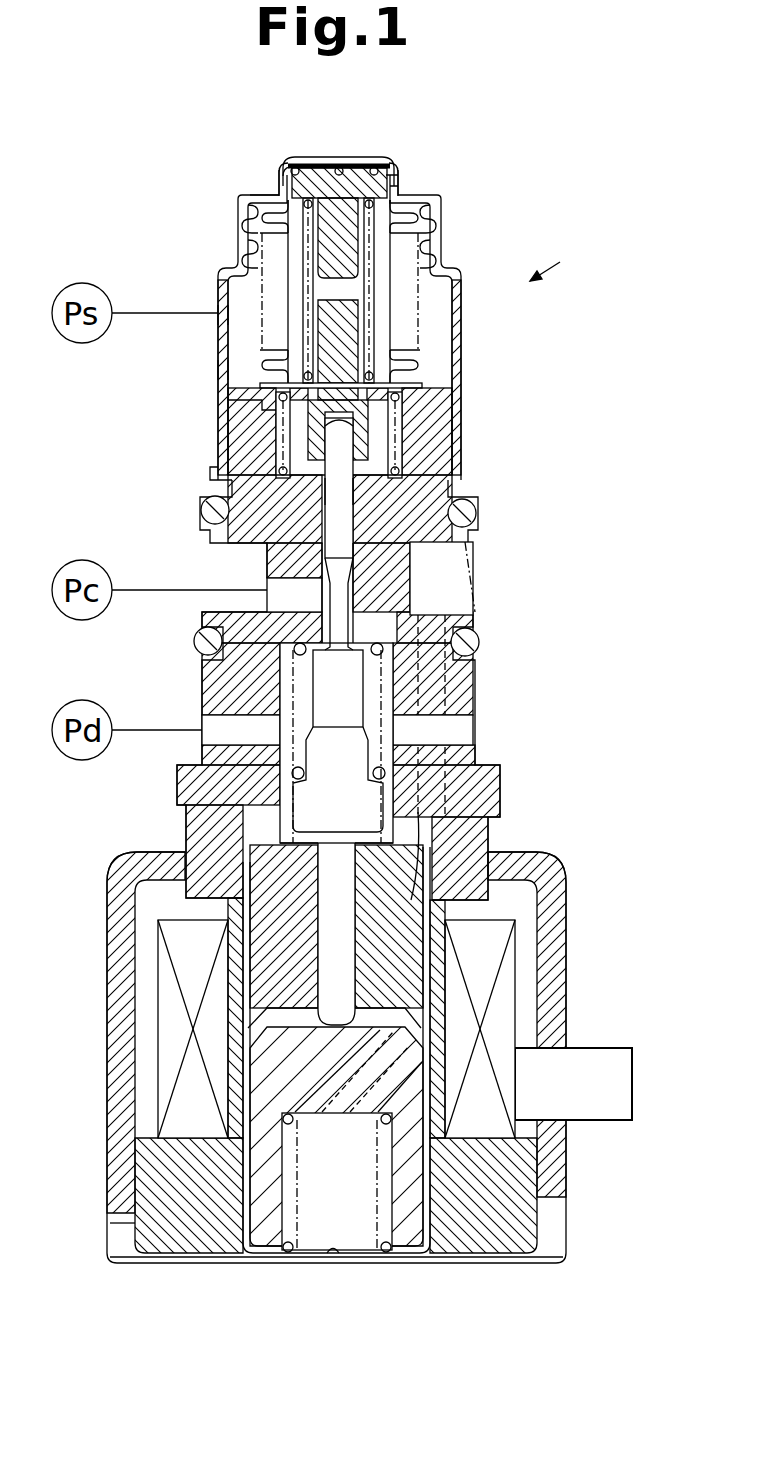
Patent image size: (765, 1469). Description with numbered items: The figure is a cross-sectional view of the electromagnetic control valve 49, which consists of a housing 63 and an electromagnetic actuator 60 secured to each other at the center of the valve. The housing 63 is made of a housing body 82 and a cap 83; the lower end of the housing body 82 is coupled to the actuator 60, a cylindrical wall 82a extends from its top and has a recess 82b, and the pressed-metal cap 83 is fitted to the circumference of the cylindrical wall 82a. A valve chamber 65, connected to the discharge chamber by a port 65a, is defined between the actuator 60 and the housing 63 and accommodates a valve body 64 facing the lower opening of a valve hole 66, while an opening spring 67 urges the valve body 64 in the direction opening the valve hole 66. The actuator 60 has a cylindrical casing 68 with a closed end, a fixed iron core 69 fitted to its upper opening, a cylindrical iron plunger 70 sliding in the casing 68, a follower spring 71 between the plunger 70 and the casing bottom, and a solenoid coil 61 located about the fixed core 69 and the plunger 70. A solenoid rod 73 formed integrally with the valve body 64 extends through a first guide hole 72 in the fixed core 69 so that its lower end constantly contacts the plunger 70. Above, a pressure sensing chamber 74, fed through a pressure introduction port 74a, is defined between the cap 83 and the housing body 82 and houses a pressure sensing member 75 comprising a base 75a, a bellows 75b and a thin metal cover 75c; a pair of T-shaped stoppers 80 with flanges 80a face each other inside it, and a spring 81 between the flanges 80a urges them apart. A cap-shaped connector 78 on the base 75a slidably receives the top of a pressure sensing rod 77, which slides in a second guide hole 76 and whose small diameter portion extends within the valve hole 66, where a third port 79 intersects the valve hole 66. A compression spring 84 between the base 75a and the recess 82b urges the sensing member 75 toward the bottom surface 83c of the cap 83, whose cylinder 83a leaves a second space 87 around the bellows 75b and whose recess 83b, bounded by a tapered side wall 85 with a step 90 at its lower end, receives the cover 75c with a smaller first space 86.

The control valve 49 is at (604, 273).
The electromagnetic actuator 60 is at (562, 878).
The solenoid coil 61 is at (505, 960).
The housing 63 is at (455, 497).
The valve body 64 is at (327, 683).
The valve chamber 65 is at (390, 690).
The port 65a is at (217, 742).
The valve hole 66 is at (353, 602).
The opening spring 67 is at (385, 650).
The casing 68 is at (337, 1258).
The fixed iron core 69 is at (262, 957).
The plunger 70 is at (400, 1250).
The follower spring 71 is at (284, 1260).
The first guide hole 72 is at (350, 873).
The solenoid rod 73 is at (347, 947).
The pressure sensing chamber 74 is at (355, 315).
The pressure introduction port 74a is at (218, 323).
The pressure sensing member 75 is at (428, 352).
The base 75a is at (420, 390).
The bellows 75b is at (420, 236).
The cover 75c is at (420, 204).
The second guide hole 76 is at (345, 490).
The pressure sensing rod 77 is at (349, 522).
The connector 78 is at (350, 448).
The third port 79 is at (267, 580).
The stopper 80 is at (354, 267).
The flange 80a is at (389, 176).
The spring 81 is at (260, 205).
The housing body 82 is at (240, 488).
The cylindrical wall 82a is at (245, 440).
The recess 82b is at (220, 462).
The cap 83 is at (441, 242).
The cylinder 83a is at (220, 364).
The recess 83b is at (339, 165).
The bottom surface 83c is at (385, 160).
The compression spring 84 is at (380, 420).
The side wall 85 is at (297, 160).
The first space 86 is at (280, 180).
The second space 87 is at (262, 228).
The step 90 is at (277, 190).